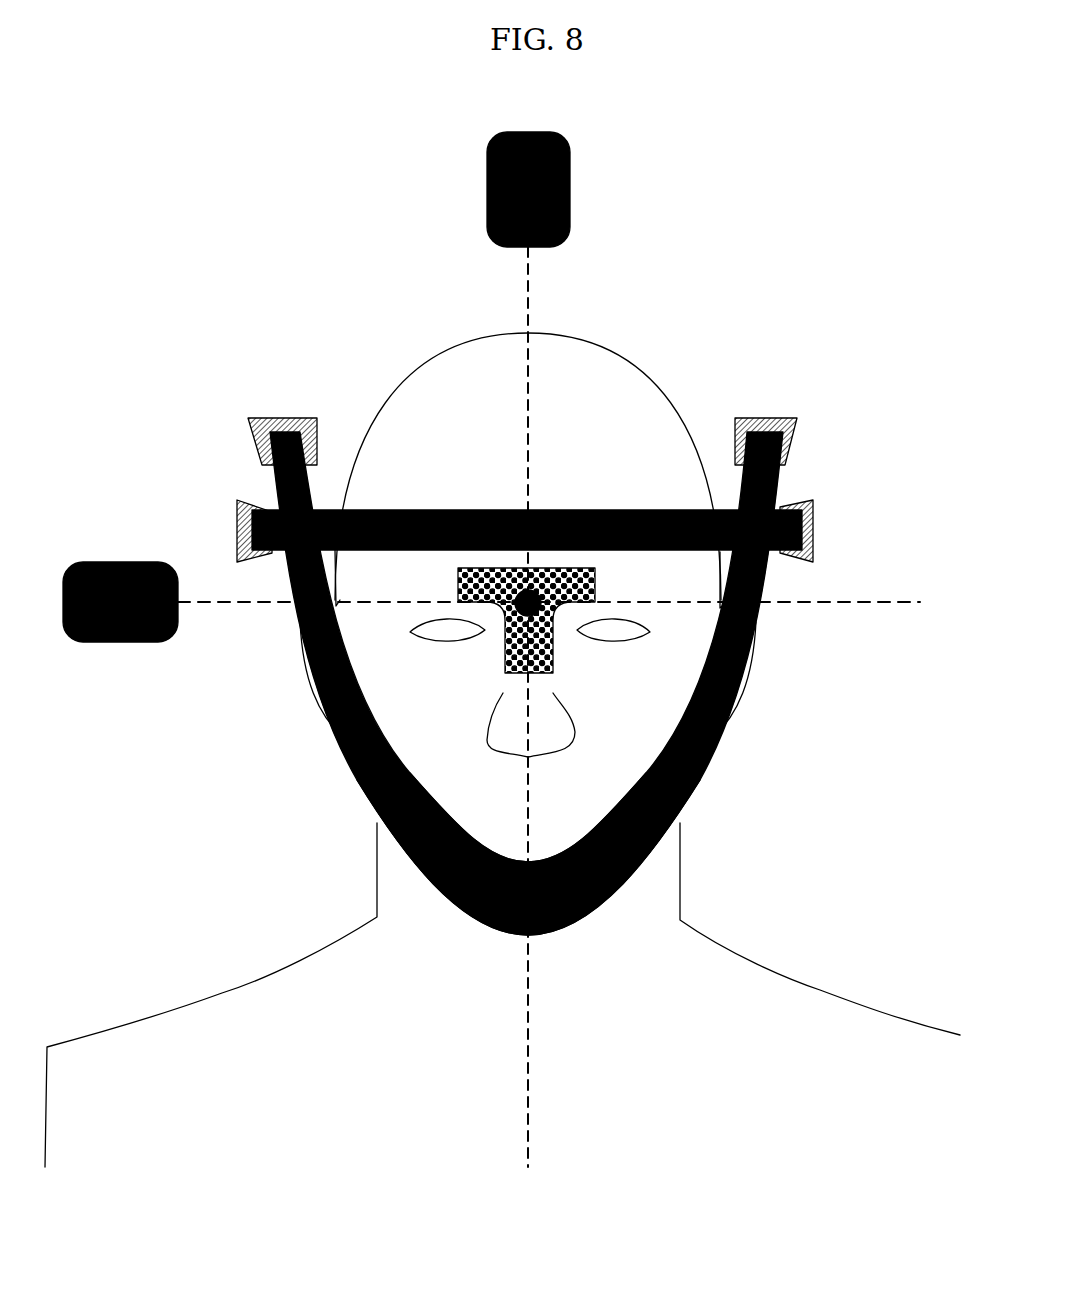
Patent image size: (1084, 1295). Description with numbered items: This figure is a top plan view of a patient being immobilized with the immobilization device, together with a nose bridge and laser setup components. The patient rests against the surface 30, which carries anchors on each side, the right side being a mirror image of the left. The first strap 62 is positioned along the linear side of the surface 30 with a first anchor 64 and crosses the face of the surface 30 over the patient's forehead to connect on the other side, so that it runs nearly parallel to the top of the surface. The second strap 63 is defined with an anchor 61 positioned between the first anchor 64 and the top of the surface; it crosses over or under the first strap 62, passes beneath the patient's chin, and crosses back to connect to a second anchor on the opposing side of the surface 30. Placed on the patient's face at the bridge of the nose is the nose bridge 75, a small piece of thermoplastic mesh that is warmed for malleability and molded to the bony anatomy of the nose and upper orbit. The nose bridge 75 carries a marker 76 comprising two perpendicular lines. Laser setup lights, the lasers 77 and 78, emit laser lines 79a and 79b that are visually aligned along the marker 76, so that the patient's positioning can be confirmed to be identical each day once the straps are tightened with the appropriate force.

The surface 30 is at (800, 822).
The anchor 61 is at (258, 418).
The first strap 62 is at (780, 508).
The second strap 63 is at (345, 750).
The first anchor 64 is at (802, 560).
The nose bridge 75 is at (487, 510).
The marker 76 is at (537, 510).
The laser 77 is at (117, 643).
The laser 78 is at (570, 170).
The laser 79a is at (222, 598).
The laser 79b is at (522, 285).